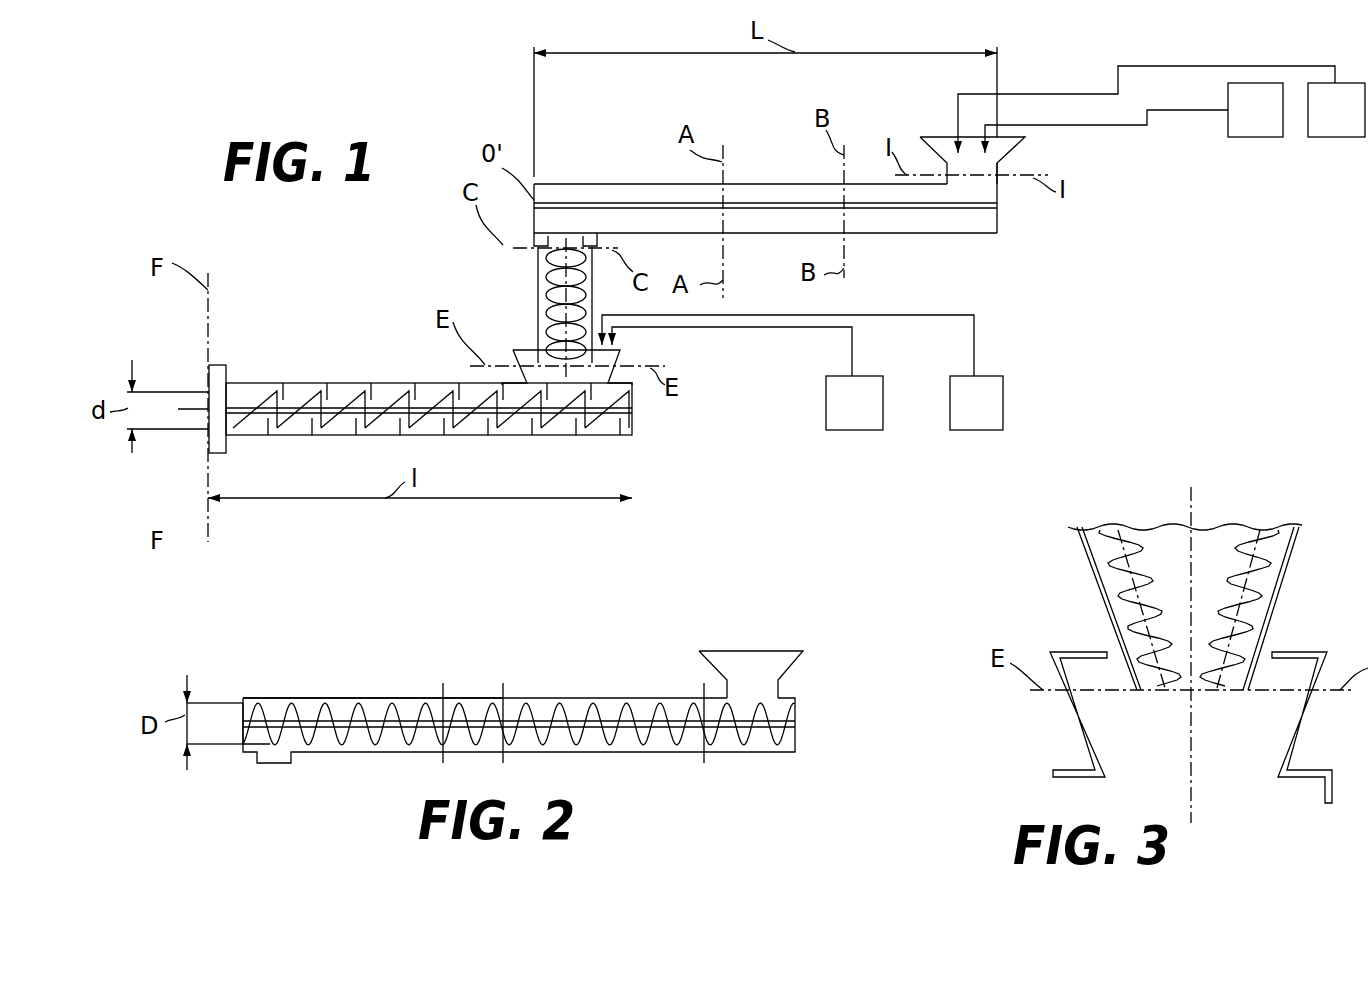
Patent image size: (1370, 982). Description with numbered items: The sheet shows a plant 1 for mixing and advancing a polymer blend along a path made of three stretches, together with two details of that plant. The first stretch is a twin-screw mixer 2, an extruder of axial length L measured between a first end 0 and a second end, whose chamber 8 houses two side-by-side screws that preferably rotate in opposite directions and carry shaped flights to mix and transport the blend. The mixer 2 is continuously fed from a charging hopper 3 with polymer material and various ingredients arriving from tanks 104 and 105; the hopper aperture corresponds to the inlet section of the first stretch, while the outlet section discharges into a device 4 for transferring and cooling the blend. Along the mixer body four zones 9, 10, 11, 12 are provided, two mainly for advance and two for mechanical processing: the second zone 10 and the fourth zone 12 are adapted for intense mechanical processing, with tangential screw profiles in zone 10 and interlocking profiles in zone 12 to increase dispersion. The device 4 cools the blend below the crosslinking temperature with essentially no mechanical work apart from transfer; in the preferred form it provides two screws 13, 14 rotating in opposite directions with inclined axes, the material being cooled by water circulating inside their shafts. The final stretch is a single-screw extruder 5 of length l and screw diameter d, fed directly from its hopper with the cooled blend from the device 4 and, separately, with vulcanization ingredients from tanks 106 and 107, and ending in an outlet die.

In FIG. 1, the plant 1 is at (463, 122).
In FIG. 1, the first end 0 is at (997, 230).
In FIG. 1, the twin-screw mixer 2 is at (997, 205).
In FIG. 2, the twin-screw mixer 2 is at (305, 688).
In FIG. 1, the charging hopper 3 is at (1010, 148).
In FIG. 1, the device for transferring and cooling the blend 4 is at (538, 298).
In FIG. 3, the device for transferring and cooling the blend 4 is at (1250, 490).
In FIG. 1, the single-screw extruder 5 is at (348, 383).
In FIG. 1, the chamber 8 is at (650, 184).
In FIG. 2, the first zone 9 is at (795, 710).
In FIG. 2, the second zone 10 is at (585, 703).
In FIG. 2, the third zone 11 is at (475, 703).
In FIG. 2, the fourth zone 12 is at (373, 703).
In FIG. 3, the screw 13 is at (1250, 565).
In FIG. 3, the screw 14 is at (1128, 545).
In FIG. 1, the tank 104 is at (1255, 137).
In FIG. 1, the tank 105 is at (1340, 137).
In FIG. 1, the tank 106 is at (855, 430).
In FIG. 1, the tank 107 is at (975, 430).